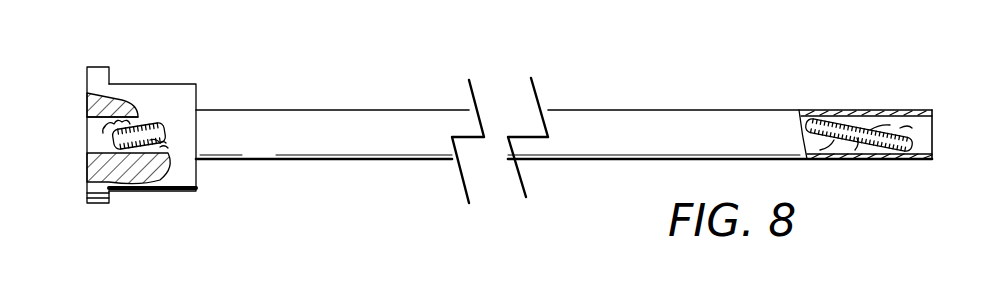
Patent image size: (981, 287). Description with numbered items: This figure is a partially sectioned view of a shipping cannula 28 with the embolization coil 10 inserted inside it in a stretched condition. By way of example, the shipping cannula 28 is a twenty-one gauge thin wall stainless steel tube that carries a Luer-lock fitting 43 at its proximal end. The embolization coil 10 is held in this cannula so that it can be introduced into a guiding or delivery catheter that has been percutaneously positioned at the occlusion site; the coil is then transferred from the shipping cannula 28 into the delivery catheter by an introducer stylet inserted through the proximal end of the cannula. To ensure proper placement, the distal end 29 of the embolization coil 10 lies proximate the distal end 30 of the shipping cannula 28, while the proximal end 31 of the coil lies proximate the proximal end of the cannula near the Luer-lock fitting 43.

The embolization coil 10 is at (828, 104).
The shipping cannula 28 is at (285, 156).
The distal end of the embolization coil 29 is at (849, 119).
The distal end of the shipping cannula 30 is at (939, 126).
The proximal end of the embolization coil 31 is at (143, 125).
The Luer-lock fitting 43 is at (98, 75).